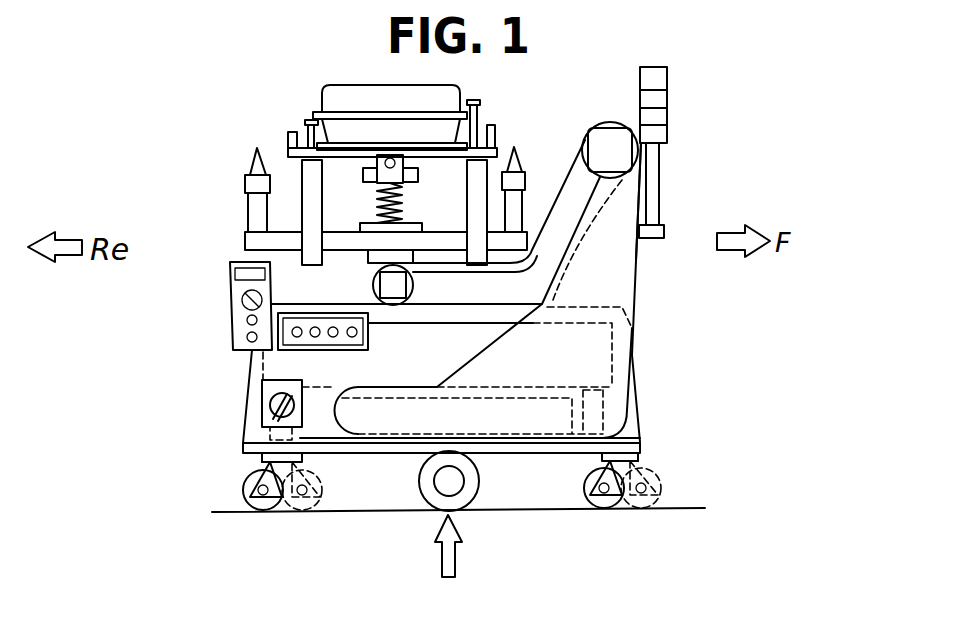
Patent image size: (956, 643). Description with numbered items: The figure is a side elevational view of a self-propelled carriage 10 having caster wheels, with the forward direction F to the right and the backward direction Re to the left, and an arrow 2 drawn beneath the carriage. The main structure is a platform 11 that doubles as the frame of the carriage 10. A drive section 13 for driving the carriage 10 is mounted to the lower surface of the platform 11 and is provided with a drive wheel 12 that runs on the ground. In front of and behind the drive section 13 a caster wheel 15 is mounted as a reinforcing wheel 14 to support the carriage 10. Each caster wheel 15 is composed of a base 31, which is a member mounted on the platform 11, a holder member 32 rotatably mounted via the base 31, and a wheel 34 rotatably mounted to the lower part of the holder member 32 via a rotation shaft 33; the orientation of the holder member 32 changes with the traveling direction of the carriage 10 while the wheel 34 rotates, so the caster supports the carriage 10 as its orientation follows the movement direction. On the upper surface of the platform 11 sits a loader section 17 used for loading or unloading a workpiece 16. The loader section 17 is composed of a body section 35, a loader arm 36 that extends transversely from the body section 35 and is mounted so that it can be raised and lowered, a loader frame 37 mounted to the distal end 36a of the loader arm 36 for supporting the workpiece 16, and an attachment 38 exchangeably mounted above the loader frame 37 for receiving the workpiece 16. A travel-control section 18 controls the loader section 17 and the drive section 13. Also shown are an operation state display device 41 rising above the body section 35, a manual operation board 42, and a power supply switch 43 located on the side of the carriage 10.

The viewing direction arrow of FIG. 2 is at (449, 572).
The carriage 10 is at (230, 158).
The platform 11 is at (243, 450).
The drive wheel 12 is at (473, 492).
The drive section 13 is at (490, 480).
The reinforcing wheel 14 is at (265, 520).
The caster wheel 15 is at (607, 517).
The workpiece 16 is at (341, 85).
The loader section 17 is at (637, 302).
The travel-control section 18 is at (229, 305).
The base 31 is at (258, 460).
The holder member 32 is at (247, 474).
The rotation shaft 33 is at (242, 491).
The wheel 34 is at (256, 512).
The body section 35 is at (633, 279).
The loader arm 36 is at (563, 185).
The distal end 36a is at (372, 290).
The loader frame 37 is at (245, 203).
The attachment 38 is at (284, 136).
The operation state display device 41 is at (668, 102).
The manual operation board 42 is at (297, 354).
The power supply switch 43 is at (263, 413).